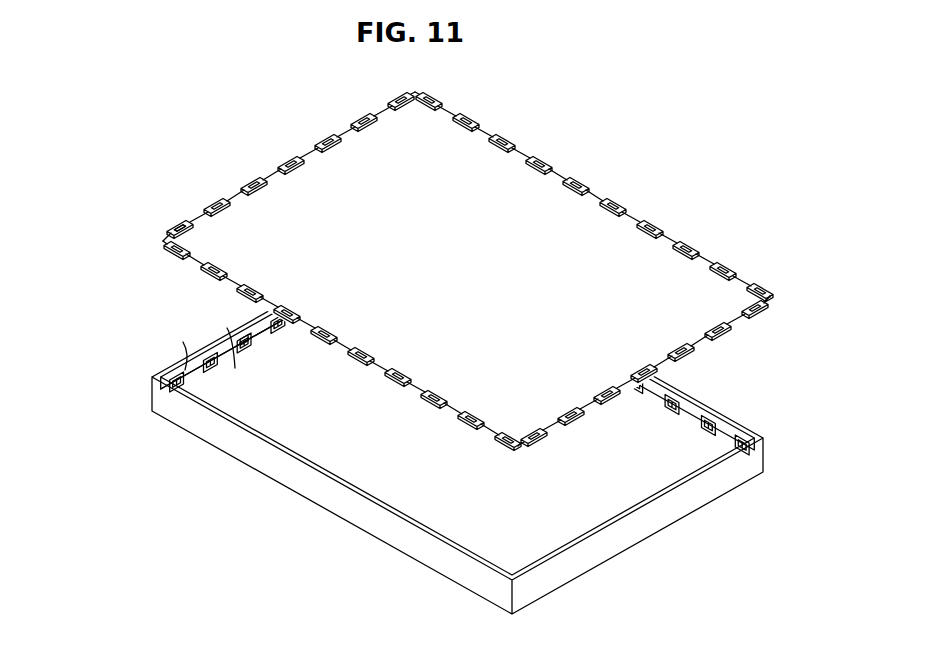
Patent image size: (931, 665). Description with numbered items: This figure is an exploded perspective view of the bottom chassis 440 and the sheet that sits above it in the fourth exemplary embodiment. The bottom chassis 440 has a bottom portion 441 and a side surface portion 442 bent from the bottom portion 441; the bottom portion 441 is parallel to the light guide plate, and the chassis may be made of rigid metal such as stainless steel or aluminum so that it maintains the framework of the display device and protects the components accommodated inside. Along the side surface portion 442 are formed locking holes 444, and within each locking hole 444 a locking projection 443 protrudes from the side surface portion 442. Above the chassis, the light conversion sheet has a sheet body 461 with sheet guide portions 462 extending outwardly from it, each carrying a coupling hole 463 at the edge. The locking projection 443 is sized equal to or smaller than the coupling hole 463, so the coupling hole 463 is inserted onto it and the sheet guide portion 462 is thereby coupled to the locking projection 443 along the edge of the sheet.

The bottom chassis 440 is at (405, 424).
The bottom portion 441 is at (231, 336).
The side surface portion 442 is at (173, 360).
The locking projection 443 is at (208, 353).
The locking hole 444 is at (233, 334).
The sheet body 461 is at (203, 226).
The sheet guide portion 462 is at (410, 271).
The coupling hole 463 is at (183, 219).